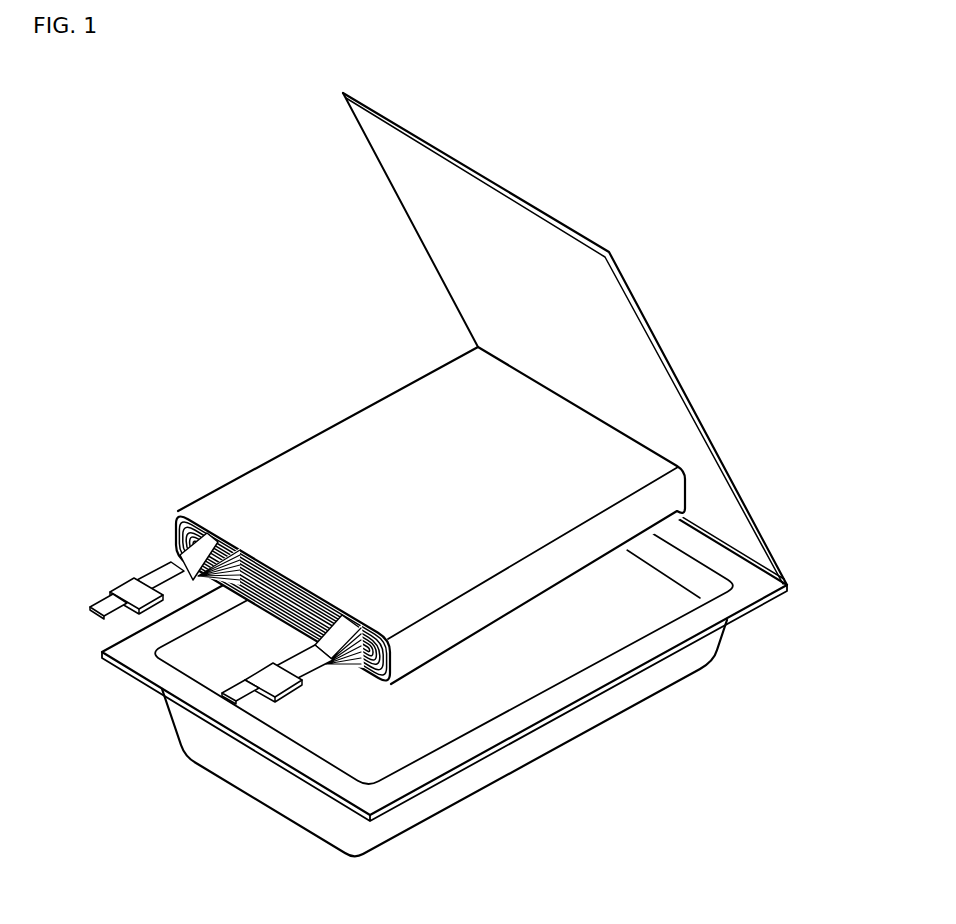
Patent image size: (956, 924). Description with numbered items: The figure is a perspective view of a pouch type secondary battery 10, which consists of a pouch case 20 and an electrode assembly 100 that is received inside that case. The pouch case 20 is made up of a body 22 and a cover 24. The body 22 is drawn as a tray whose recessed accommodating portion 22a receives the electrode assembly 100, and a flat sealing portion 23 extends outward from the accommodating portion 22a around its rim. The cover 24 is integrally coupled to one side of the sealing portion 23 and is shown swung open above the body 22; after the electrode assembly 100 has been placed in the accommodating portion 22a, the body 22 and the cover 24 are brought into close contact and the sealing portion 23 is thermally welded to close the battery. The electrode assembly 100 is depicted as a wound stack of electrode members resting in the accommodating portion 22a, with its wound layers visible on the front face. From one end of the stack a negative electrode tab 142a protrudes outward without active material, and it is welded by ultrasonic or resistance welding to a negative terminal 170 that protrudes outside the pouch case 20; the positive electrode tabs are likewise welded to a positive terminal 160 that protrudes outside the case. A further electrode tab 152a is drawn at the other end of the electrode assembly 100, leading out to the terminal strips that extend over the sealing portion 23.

The secondary battery 10 is at (97, 125).
The pouch case 20 is at (444, 650).
The body 22 is at (444, 650).
The accommodating portion 22a is at (380, 747).
The sealing portion 23 is at (305, 766).
The cover 24 is at (746, 538).
The electrode assembly 100 is at (352, 583).
The negative electrode tab 142a is at (192, 553).
The second electrode tab 152a is at (305, 610).
The positive terminal 160 is at (101, 604).
The negative terminal 170 is at (227, 703).